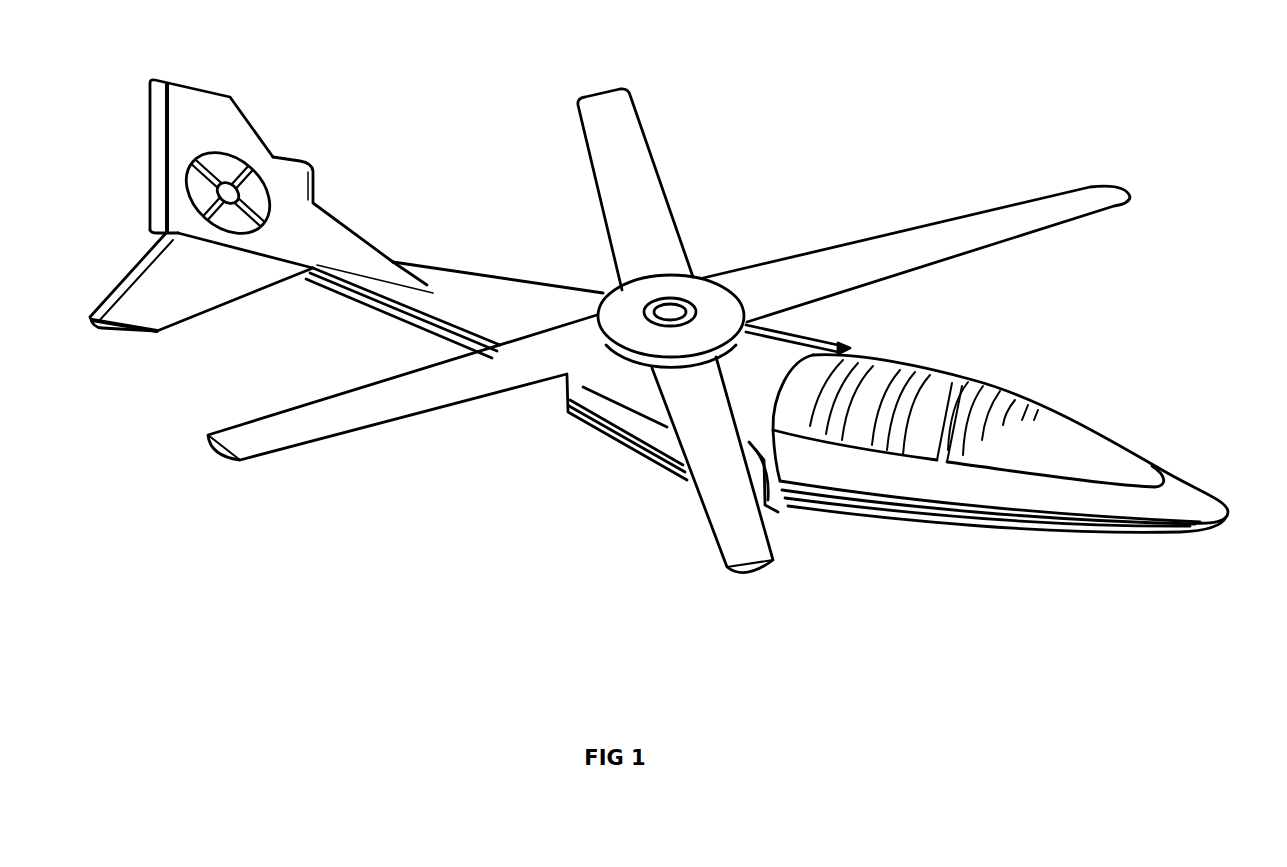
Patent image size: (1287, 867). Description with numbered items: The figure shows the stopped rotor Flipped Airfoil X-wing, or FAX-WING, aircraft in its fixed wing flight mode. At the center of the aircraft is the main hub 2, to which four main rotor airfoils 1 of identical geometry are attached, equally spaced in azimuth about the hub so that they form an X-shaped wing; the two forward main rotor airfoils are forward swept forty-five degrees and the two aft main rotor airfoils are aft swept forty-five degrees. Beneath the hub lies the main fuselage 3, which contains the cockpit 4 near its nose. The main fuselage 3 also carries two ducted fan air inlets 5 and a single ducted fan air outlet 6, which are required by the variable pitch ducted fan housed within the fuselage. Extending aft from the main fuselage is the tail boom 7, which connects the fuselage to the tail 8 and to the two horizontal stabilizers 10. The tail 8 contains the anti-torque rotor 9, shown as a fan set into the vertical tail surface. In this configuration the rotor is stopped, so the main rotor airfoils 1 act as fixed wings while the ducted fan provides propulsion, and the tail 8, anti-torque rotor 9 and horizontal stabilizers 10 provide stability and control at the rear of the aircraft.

The main rotor airfoils 1 is at (627, 147).
The main hub 2 is at (698, 290).
The main fuselage 3 is at (1055, 498).
The cockpit 4 is at (978, 375).
The ducted fan air inlets 5 is at (850, 347).
The ducted fan air outlet 6 is at (563, 405).
The tail boom 7 is at (486, 290).
The tail 8 is at (190, 103).
The anti-torque rotor 9 is at (190, 173).
The horizontal stabilizers 10 is at (290, 167).